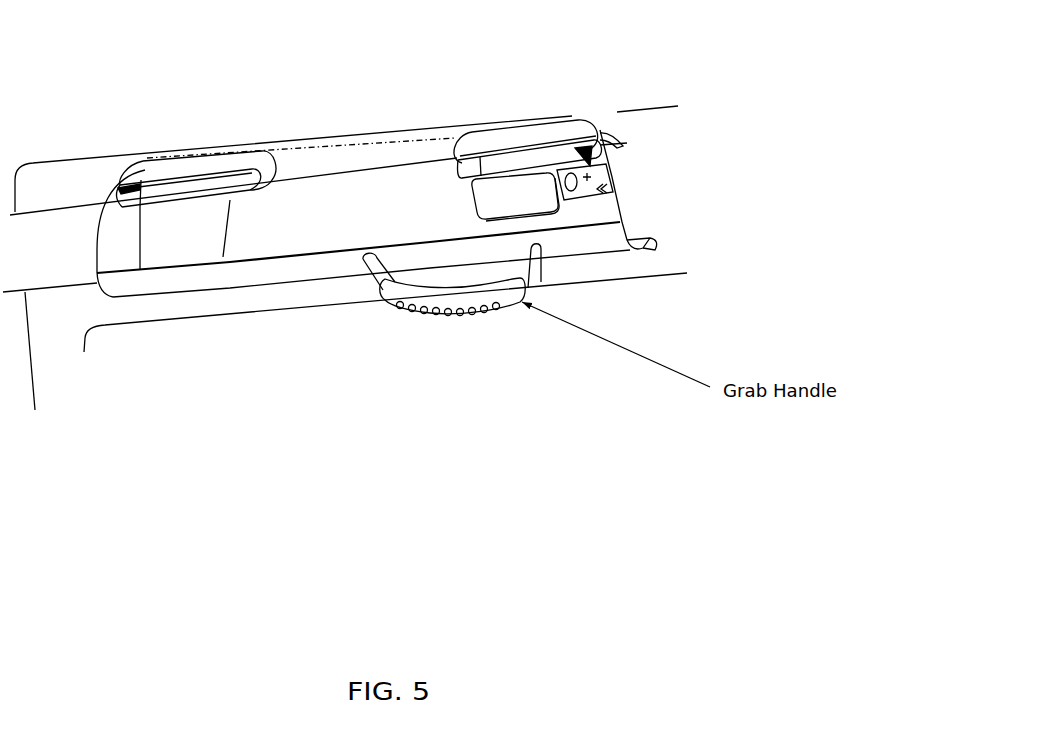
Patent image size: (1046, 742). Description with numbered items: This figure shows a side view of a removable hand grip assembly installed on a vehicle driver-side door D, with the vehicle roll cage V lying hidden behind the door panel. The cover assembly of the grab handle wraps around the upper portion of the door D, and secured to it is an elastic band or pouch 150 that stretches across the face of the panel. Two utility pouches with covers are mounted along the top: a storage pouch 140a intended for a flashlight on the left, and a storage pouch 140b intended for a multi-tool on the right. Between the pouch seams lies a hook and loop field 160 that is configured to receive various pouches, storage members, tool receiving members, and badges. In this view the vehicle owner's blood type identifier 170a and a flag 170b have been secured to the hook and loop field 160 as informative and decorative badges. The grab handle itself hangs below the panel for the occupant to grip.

The utility pouch 140a is at (272, 148).
The utility pouch 140b is at (583, 123).
The elastic band or field 150 is at (188, 253).
The hook and loop field 160 is at (257, 235).
The blood type identifier 170a is at (617, 183).
The flag 170b is at (557, 207).
The vehicle roll cage (hidden) V is at (653, 223).
The vehicle driver-side door D is at (57, 336).